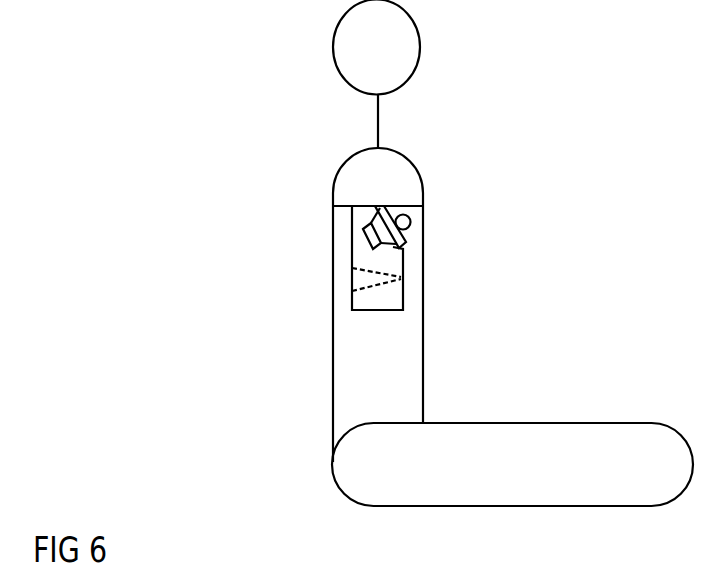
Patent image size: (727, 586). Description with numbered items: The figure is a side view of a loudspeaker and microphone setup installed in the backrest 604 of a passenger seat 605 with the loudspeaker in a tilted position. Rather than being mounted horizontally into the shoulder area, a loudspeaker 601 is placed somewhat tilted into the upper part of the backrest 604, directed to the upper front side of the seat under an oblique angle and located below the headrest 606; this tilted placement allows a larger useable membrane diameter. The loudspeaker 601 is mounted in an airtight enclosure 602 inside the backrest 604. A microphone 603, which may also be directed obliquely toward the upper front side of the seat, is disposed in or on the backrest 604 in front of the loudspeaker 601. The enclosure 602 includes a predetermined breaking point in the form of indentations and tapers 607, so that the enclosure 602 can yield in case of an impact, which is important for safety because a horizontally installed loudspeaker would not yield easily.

The loudspeaker 601 is at (363, 231).
The enclosure 602 is at (403, 293).
The microphone 603 is at (410, 222).
The backrest 604 is at (333, 400).
The passenger seat 605 is at (560, 417).
The headrest 606 is at (420, 45).
The indentations and tapers 607 is at (360, 277).